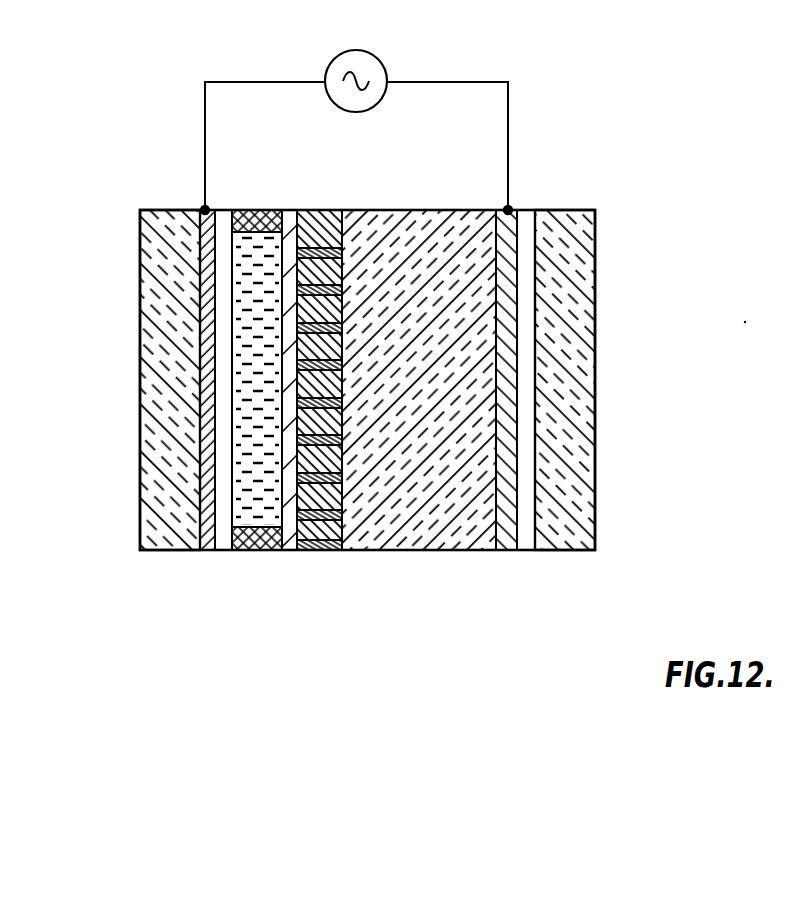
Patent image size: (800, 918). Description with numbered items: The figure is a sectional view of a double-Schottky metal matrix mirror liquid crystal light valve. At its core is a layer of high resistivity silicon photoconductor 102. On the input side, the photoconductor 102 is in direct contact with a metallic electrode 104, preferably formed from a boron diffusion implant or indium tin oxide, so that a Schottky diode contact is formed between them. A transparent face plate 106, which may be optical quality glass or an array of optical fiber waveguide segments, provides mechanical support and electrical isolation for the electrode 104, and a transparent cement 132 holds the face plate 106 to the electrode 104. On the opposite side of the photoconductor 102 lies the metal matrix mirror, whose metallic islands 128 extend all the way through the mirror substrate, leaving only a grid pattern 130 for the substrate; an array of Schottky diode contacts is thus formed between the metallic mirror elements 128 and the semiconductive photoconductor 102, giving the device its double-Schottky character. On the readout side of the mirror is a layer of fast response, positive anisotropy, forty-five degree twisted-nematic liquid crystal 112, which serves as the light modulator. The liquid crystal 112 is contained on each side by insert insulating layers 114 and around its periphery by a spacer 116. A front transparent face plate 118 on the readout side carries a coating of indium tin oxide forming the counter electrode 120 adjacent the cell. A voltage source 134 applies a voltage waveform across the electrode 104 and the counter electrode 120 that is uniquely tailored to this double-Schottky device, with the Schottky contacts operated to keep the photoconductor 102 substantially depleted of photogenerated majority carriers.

The photoconductor 102 is at (452, 212).
The electrode 104 is at (508, 551).
The face plate 106 is at (595, 262).
The liquid crystal 112 is at (250, 500).
The insert insulating layers 114 is at (347, 379).
The spacer 116 is at (257, 551).
The front transparent face plate 118 is at (147, 451).
The counter electrode 120 is at (213, 268).
The metallic islands 128 is at (343, 298).
The grid pattern 130 is at (343, 440).
The transparent cement 132 is at (524, 551).
The voltage source 134 is at (382, 62).